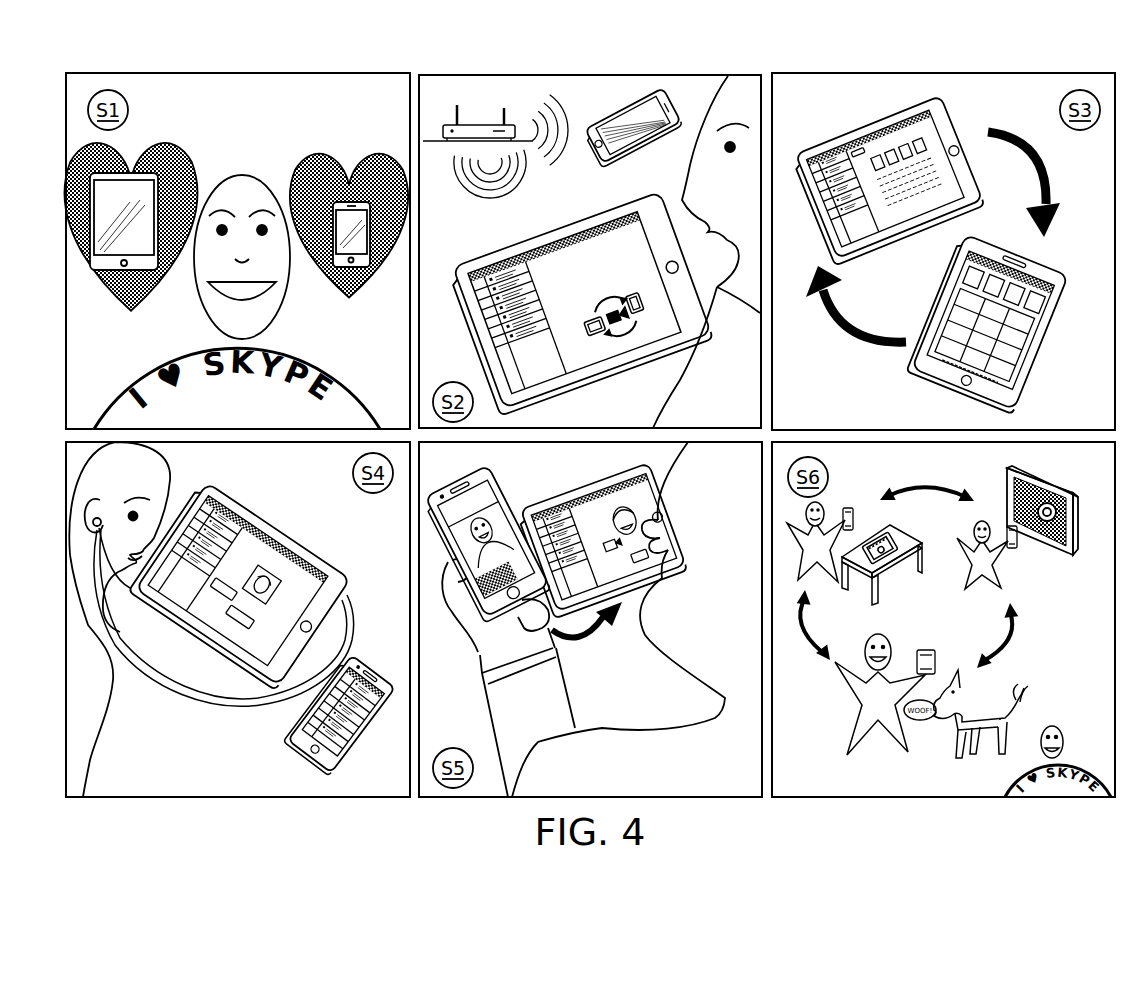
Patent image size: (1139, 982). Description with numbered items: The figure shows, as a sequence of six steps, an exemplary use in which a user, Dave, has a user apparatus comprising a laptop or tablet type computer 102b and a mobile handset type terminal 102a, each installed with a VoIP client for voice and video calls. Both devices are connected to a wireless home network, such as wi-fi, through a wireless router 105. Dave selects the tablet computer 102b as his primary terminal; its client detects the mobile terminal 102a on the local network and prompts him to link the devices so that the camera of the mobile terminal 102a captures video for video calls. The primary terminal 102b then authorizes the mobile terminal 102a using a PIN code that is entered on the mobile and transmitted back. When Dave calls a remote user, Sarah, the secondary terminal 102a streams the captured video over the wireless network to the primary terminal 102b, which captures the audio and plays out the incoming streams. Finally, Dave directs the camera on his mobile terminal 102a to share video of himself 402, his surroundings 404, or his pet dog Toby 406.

The mobile handset type terminal 102a is at (350, 272).
The laptop or tablet type computer 102b is at (140, 272).
The wireless router 105 is at (476, 122).
The himself (Dave) 402 is at (809, 573).
The surroundings 404 is at (1072, 558).
The pet dog 406 is at (955, 748).